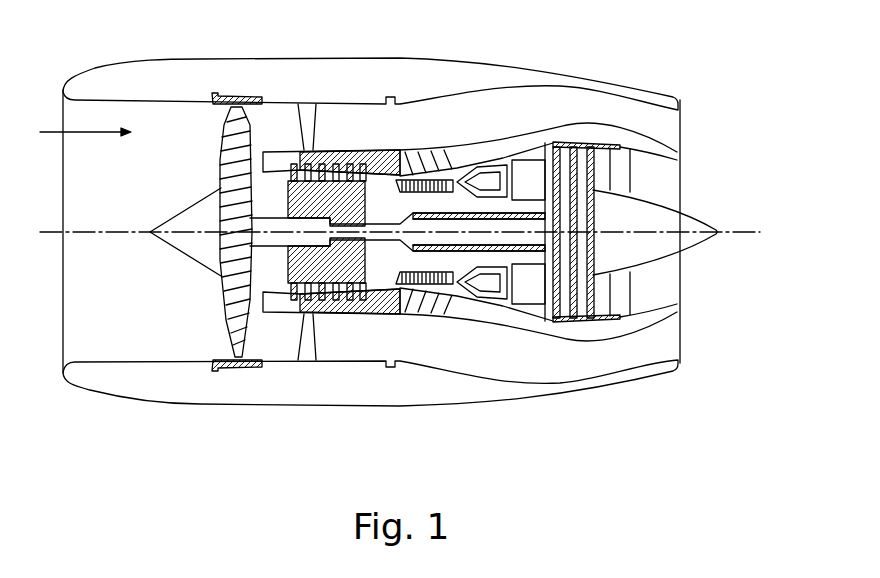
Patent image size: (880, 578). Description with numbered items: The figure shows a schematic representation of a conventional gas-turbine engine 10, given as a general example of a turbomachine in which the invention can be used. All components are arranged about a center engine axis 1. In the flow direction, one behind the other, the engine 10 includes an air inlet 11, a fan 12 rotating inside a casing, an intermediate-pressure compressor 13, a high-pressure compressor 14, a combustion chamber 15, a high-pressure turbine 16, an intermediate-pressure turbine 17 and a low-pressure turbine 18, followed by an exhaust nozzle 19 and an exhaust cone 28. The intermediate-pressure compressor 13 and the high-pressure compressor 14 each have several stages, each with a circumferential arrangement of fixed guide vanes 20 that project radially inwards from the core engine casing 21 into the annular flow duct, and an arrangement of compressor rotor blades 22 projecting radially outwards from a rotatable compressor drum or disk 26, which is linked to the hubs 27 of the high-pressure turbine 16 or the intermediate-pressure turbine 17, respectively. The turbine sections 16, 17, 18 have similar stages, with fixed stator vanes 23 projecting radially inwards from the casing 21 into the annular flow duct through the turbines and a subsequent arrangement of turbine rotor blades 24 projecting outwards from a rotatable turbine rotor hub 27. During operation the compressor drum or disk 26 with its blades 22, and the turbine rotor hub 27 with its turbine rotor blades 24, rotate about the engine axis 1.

The engine axis 1 is at (92, 234).
The gas-turbine engine 10 is at (484, 120).
The air inlet 11 is at (186, 121).
The fan 12 is at (228, 120).
The intermediate-pressure compressor 13 is at (305, 148).
The high-pressure compressor 14 is at (420, 163).
The combustion chamber 15 is at (480, 177).
The high-pressure turbine 16 is at (512, 165).
The intermediate-pressure turbine 17 is at (545, 153).
The low-pressure turbine 18 is at (600, 143).
The exhaust nozzle 19 is at (623, 170).
The guide vanes 20 is at (301, 318).
The core engine casing 21 is at (320, 318).
The compressor rotor blades 22 is at (352, 318).
The stator vanes 23 is at (548, 322).
The turbine rotor blades 24 is at (573, 322).
The compressor drum or disk 26 is at (377, 287).
The turbine rotor hub 27 is at (604, 252).
The exhaust cone 28 is at (687, 228).